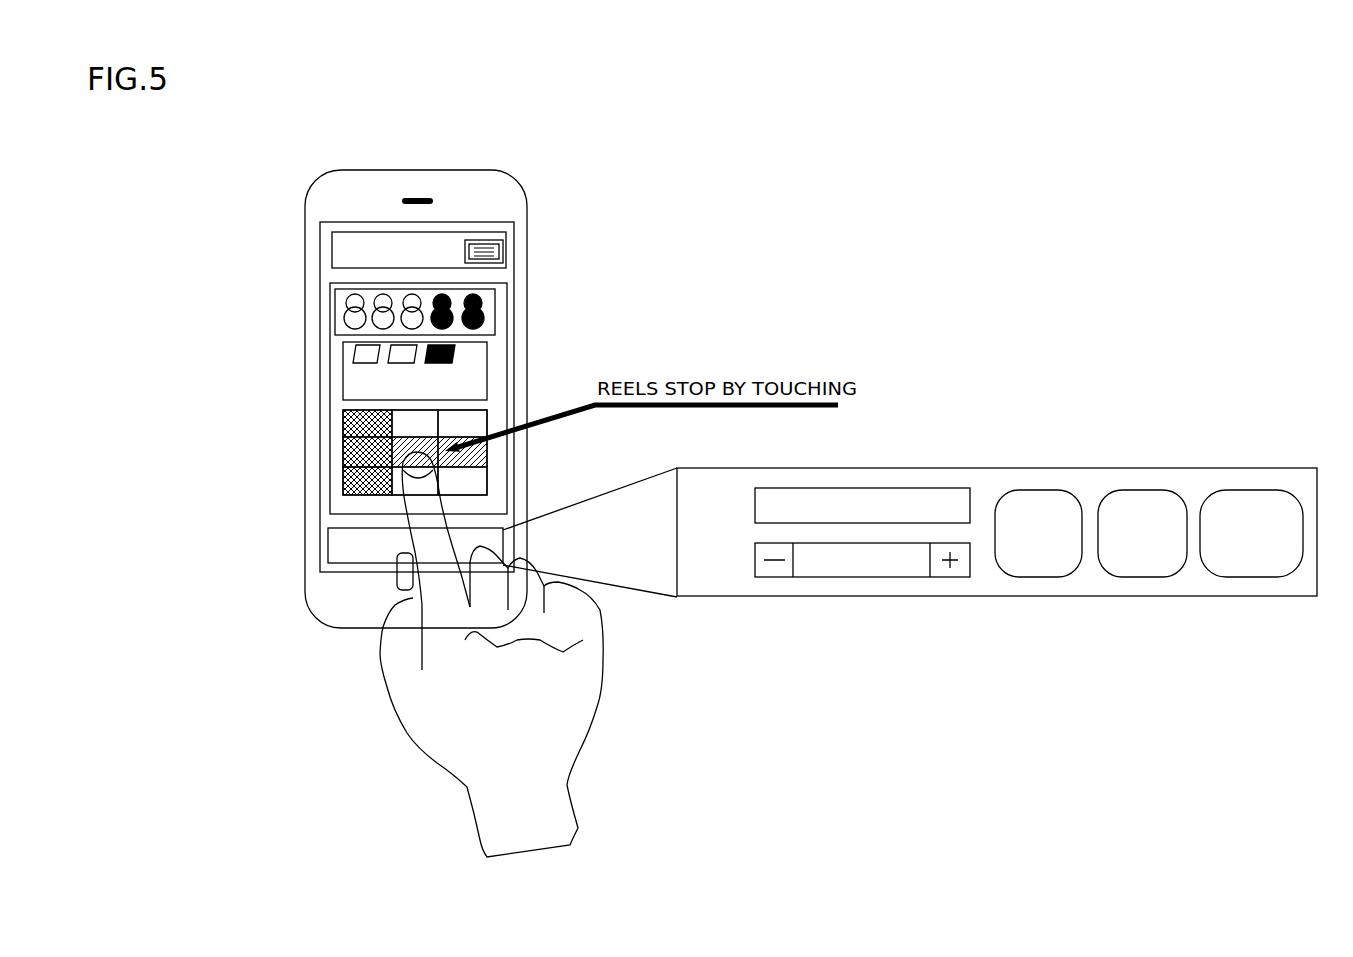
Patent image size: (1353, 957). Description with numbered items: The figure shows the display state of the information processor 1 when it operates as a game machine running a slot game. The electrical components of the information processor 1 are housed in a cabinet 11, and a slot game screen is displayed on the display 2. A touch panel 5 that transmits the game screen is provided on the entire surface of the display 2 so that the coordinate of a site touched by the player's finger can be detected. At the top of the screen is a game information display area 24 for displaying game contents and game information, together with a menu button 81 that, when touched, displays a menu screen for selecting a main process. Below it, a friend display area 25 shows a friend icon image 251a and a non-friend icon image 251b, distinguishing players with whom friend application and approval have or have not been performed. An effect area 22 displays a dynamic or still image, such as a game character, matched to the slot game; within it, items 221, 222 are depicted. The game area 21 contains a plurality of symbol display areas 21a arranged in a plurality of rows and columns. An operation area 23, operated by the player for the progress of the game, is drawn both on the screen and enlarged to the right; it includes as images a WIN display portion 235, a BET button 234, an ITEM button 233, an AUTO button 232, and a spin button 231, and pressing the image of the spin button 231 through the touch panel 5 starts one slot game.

The information processor 1 is at (536, 179).
The cabinet 11 is at (443, 169).
The display 2 is at (461, 397).
The touch panel 5 is at (507, 288).
The game information display area 24 is at (332, 252).
The menu button 81 is at (503, 256).
The friend display area 25 is at (330, 298).
The friend icon image 251a is at (346, 306).
The non-friend icon image 251b is at (484, 308).
The effect area 22 is at (348, 345).
The item card 221 is at (353, 357).
The selected item card 222 is at (456, 353).
The game area 21 is at (328, 406).
The symbol display area 21a is at (344, 481).
The operation area 23 is at (328, 545).
The WIN display portion 235 is at (893, 488).
The BET button 234 is at (871, 578).
The ITEM button 233 is at (1045, 578).
The AUTO button 232 is at (1150, 578).
The spin button 231 is at (1262, 578).